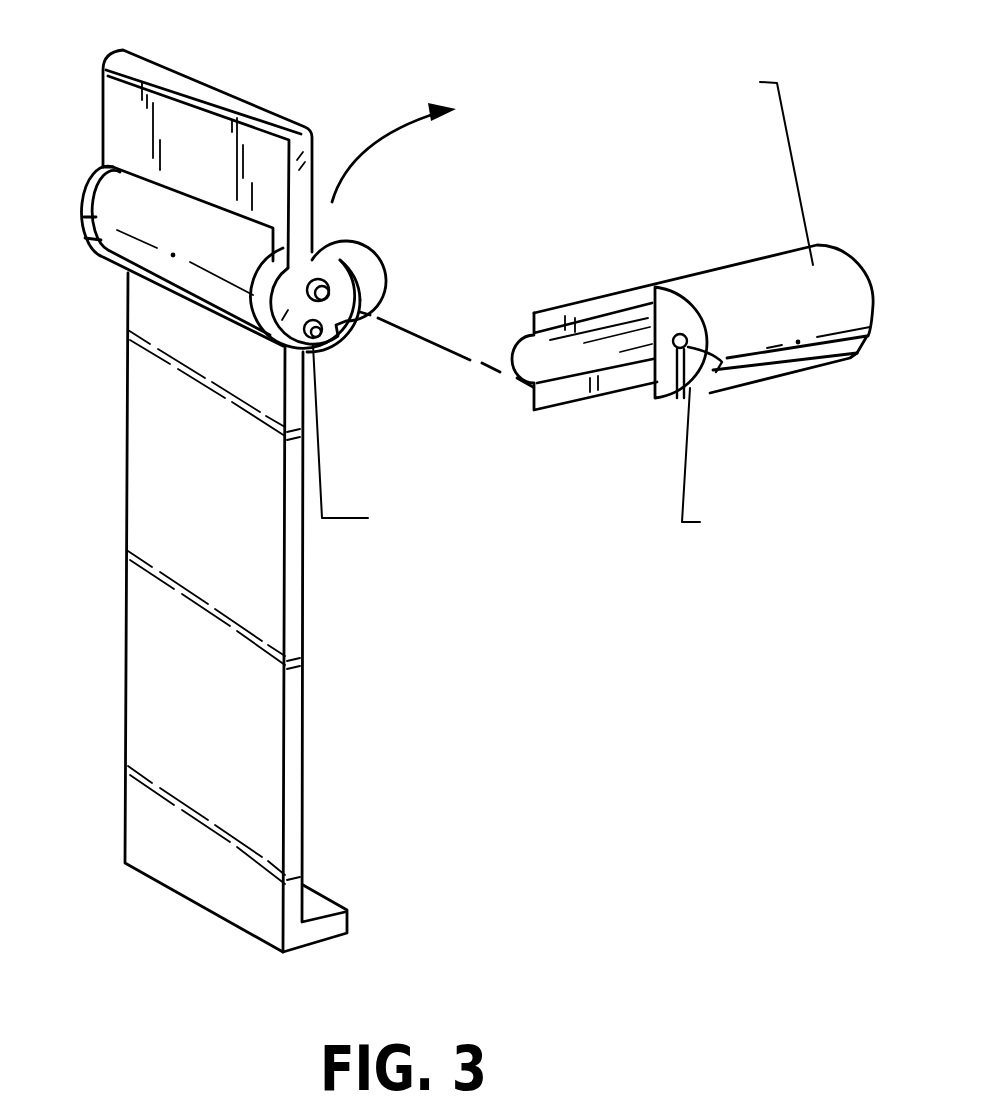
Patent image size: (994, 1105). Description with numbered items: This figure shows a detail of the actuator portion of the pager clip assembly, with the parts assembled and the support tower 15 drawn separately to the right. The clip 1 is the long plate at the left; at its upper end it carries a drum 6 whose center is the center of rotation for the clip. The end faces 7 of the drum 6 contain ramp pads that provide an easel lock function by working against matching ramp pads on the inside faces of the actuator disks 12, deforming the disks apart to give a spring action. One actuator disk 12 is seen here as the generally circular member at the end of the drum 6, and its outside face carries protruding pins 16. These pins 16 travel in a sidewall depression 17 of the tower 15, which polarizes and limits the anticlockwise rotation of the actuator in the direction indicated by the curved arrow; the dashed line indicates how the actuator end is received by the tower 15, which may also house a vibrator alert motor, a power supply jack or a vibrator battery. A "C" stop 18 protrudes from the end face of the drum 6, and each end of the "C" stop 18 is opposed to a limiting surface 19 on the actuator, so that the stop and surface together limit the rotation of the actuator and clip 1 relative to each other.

The clip 1 is at (143, 715).
The drum 6 is at (177, 270).
The end faces 7 is at (278, 320).
The actuator disks 12 is at (347, 278).
The tower 15 is at (788, 280).
The protruding pins 16 is at (313, 340).
The sidewall depressions 17 is at (700, 375).
The "C" stops 18 is at (333, 247).
The limiting surface 19 is at (311, 221).